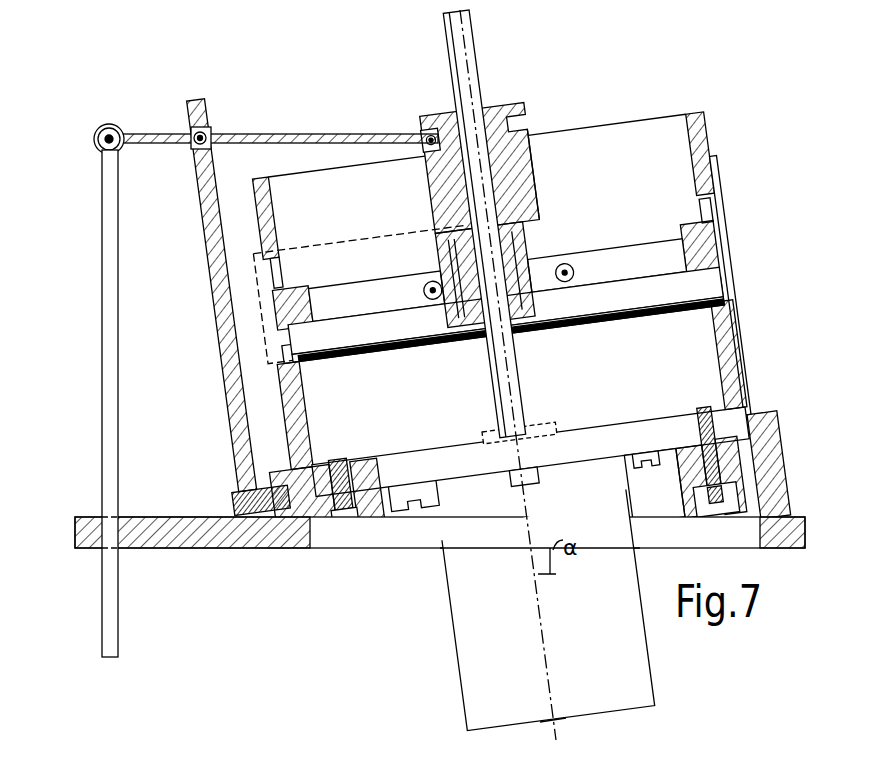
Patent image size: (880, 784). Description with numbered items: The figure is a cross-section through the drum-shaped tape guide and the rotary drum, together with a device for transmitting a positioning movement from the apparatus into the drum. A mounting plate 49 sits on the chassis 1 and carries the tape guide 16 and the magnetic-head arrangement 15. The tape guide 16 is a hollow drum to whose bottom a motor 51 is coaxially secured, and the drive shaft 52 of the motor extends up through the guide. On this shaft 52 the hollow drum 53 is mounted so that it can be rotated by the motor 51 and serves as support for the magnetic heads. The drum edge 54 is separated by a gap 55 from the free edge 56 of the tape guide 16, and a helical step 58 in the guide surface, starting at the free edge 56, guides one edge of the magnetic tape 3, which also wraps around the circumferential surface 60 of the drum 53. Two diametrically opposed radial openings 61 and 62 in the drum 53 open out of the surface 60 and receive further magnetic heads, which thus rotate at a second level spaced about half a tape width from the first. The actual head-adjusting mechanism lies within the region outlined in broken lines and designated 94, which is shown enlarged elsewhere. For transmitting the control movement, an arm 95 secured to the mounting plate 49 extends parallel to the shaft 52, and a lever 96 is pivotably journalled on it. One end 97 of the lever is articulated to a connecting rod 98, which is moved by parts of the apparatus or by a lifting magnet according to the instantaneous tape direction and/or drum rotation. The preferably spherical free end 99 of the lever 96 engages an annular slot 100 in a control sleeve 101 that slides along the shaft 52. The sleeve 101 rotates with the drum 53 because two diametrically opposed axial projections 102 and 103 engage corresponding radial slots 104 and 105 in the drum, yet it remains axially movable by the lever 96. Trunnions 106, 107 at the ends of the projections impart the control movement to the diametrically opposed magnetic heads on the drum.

The chassis 1 is at (207, 549).
The magnetic tape 3 is at (716, 206).
The magnetic-head arrangement 15 is at (650, 112).
The tape guide 16 is at (752, 380).
The mounting plate 49 is at (777, 446).
The motor 51 is at (448, 581).
The drive shaft 52 is at (467, 50).
The drum 53 is at (698, 125).
The drum edge 54 is at (570, 318).
The gap 55 is at (625, 318).
The free edge 56 is at (663, 308).
The helical step 58 is at (742, 345).
The circumferential surface 60 is at (711, 142).
The radially extending opening 61 is at (700, 208).
The radially extending opening 62 is at (289, 267).
The part surrounded by broken lines 94 is at (340, 238).
The arm 95 is at (226, 312).
The lever 96 is at (238, 128).
The end of lever 97 is at (112, 125).
The connecting rod 98 is at (112, 228).
The free end of lever 99 is at (432, 128).
The annular slot 100 is at (511, 134).
The control sleeve 101 is at (545, 202).
The axially extending projection 102 is at (540, 232).
The axially extending projection 103 is at (449, 258).
The slot 104 is at (644, 252).
The slot 105 is at (352, 300).
The trunnion 106 is at (570, 272).
The trunnion 107 is at (432, 290).